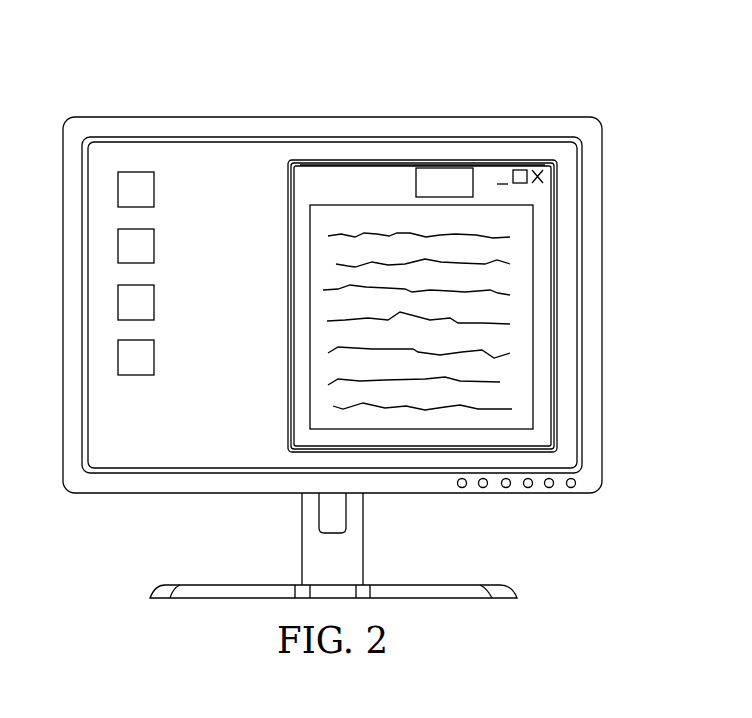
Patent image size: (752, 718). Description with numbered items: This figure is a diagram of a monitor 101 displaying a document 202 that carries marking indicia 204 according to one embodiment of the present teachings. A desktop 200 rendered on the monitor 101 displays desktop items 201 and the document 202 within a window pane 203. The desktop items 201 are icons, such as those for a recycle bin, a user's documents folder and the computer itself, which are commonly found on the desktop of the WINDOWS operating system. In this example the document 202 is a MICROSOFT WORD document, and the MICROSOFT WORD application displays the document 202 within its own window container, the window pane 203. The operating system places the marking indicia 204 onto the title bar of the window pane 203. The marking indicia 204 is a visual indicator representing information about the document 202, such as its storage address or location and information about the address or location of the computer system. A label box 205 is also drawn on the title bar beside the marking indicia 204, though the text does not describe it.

The display device / monitor system 101 is at (372, 300).
The display screen / monitor 200 is at (216, 114).
The icons 201 is at (155, 300).
The window 202 is at (543, 305).
The document content area 203 is at (286, 359).
The title bar 204 is at (380, 180).
The title label box 205 is at (474, 183).